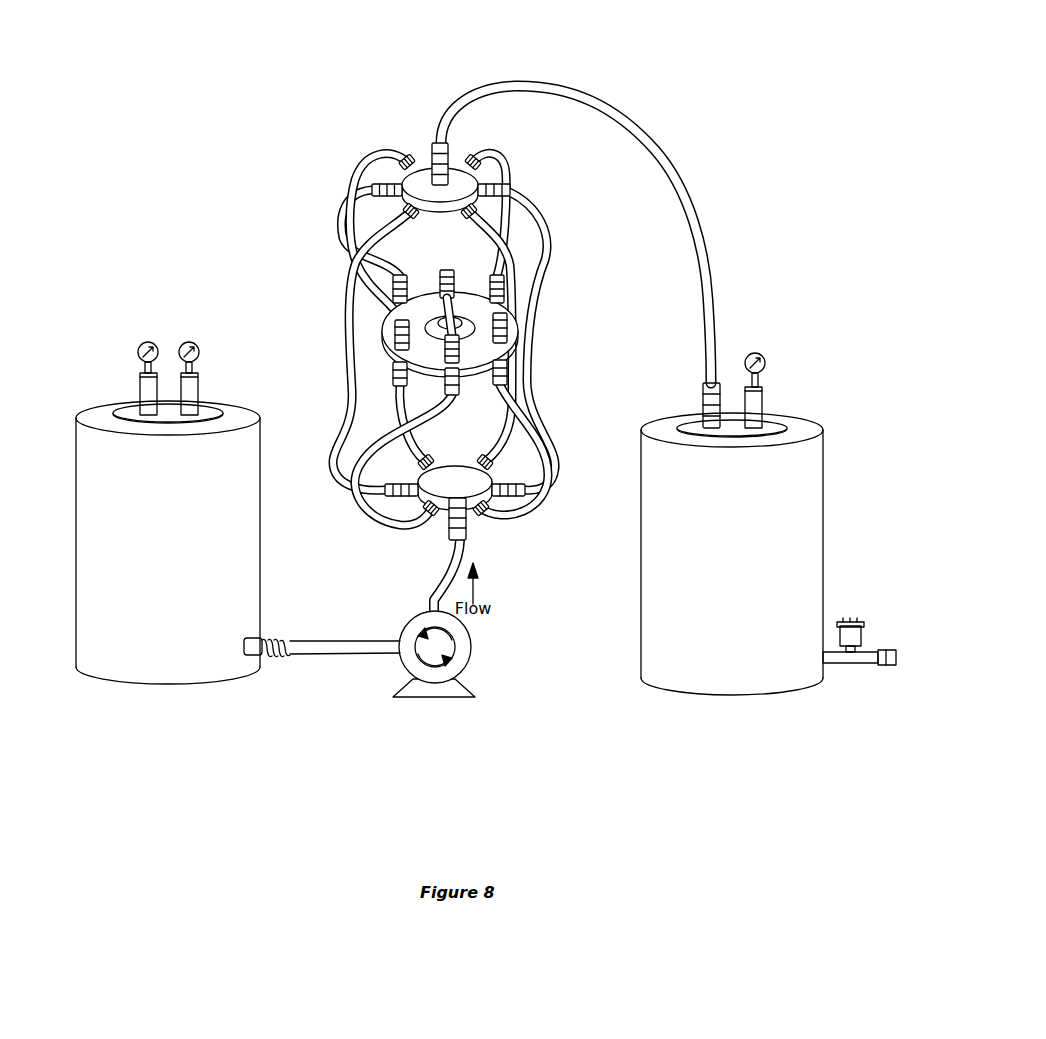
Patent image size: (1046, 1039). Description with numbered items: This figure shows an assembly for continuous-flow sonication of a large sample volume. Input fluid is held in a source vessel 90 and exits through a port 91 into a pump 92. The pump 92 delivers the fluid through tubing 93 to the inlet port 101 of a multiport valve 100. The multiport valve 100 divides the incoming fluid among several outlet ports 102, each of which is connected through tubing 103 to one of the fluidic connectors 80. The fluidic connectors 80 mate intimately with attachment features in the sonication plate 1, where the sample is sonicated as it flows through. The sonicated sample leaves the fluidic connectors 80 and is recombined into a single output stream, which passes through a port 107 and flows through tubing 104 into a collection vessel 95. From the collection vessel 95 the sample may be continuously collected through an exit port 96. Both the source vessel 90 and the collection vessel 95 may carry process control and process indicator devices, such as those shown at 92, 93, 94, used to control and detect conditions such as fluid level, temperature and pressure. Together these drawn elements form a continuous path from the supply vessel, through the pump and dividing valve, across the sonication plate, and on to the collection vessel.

The sonication plate 1 is at (518, 332).
The fluidic connectors 80 is at (395, 314).
The source vessel 90 is at (84, 504).
The port 91 is at (292, 660).
The pump 92 is at (187, 341).
The tubing 93 is at (143, 341).
The process control and process indicator device 94 is at (763, 351).
The collection vessel 95 is at (808, 528).
The exit port 96 is at (870, 627).
The multiport valve 100 is at (412, 184).
The inlet port 101 is at (446, 538).
The outlet ports 102 is at (468, 160).
The tubing 103 is at (350, 258).
The tubing 104 is at (508, 86).
The port 107 is at (433, 160).